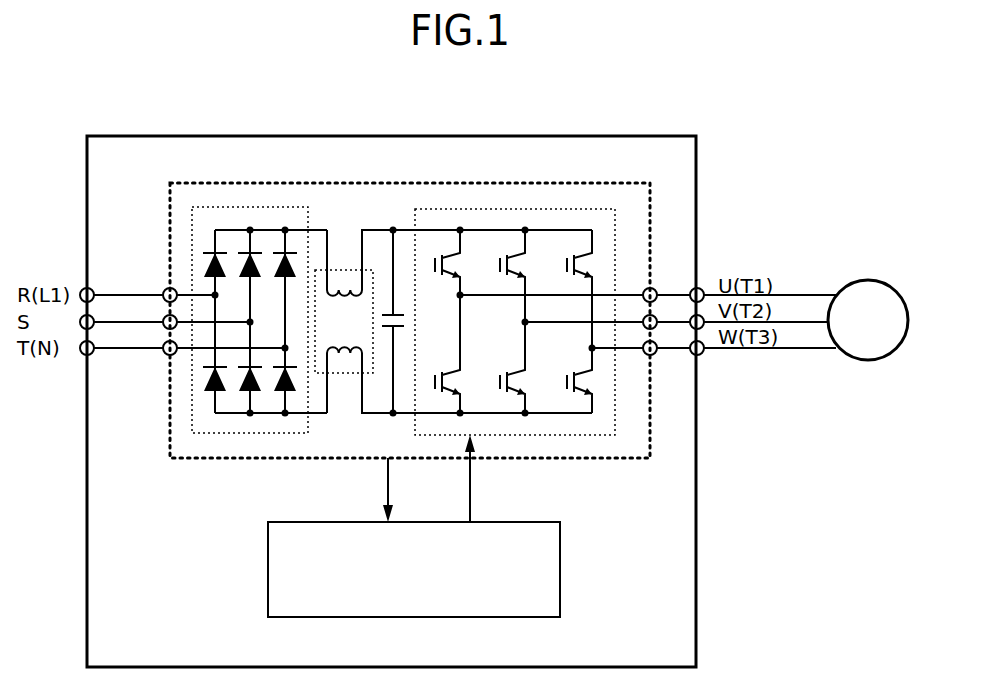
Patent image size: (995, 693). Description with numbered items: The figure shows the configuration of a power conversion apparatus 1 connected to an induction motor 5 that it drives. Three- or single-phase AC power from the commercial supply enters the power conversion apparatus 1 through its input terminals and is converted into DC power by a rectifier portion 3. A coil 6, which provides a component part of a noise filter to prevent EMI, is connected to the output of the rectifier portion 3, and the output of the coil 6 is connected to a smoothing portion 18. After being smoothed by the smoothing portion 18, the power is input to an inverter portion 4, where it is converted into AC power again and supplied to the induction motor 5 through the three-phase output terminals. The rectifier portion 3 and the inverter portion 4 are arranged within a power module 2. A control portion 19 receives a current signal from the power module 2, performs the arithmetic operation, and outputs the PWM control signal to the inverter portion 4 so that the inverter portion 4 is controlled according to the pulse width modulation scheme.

The power conversion apparatus 1 is at (203, 136).
The power module 2 is at (240, 183).
The rectifier portion 3 is at (288, 207).
The inverter portion 4 is at (440, 209).
The induction motor 5 is at (866, 281).
The coil 6 is at (338, 270).
The smoothing portion 18 is at (392, 378).
The control portion 19 is at (268, 565).